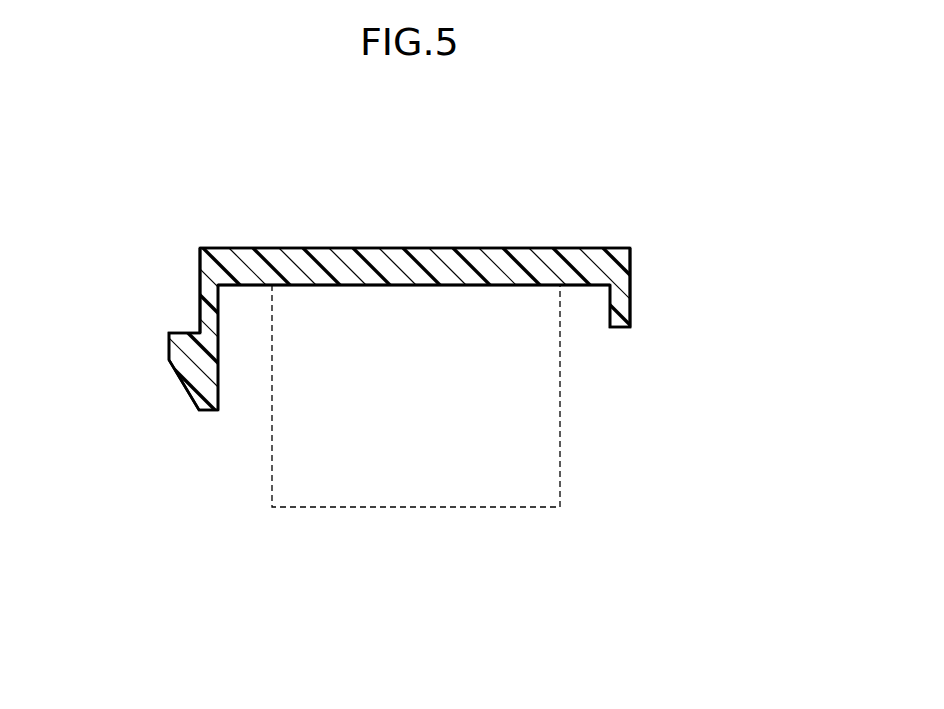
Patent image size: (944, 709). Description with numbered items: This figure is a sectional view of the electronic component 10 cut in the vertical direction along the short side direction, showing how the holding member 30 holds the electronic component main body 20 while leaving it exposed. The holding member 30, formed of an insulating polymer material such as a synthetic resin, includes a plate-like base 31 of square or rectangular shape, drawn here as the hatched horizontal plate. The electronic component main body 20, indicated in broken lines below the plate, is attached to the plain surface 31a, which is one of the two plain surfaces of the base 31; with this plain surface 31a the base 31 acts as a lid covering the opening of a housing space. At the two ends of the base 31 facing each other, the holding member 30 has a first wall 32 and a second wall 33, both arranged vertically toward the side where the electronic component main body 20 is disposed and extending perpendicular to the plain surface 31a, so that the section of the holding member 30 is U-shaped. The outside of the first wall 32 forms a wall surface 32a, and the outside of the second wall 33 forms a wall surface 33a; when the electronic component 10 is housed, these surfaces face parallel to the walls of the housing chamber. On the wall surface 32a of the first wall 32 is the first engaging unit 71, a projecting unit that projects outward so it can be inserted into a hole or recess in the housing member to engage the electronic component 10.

The electronic component 10 is at (525, 130).
The electronic component main body 20 is at (372, 507).
The holding member 30 is at (413, 243).
The base 31 is at (375, 257).
The plain surface 31a is at (402, 285).
The first wall 32 is at (200, 313).
The wall surface 32a is at (200, 295).
The second wall 33 is at (626, 307).
The wall surface 33a is at (630, 290).
The first engaging unit 71 is at (187, 388).